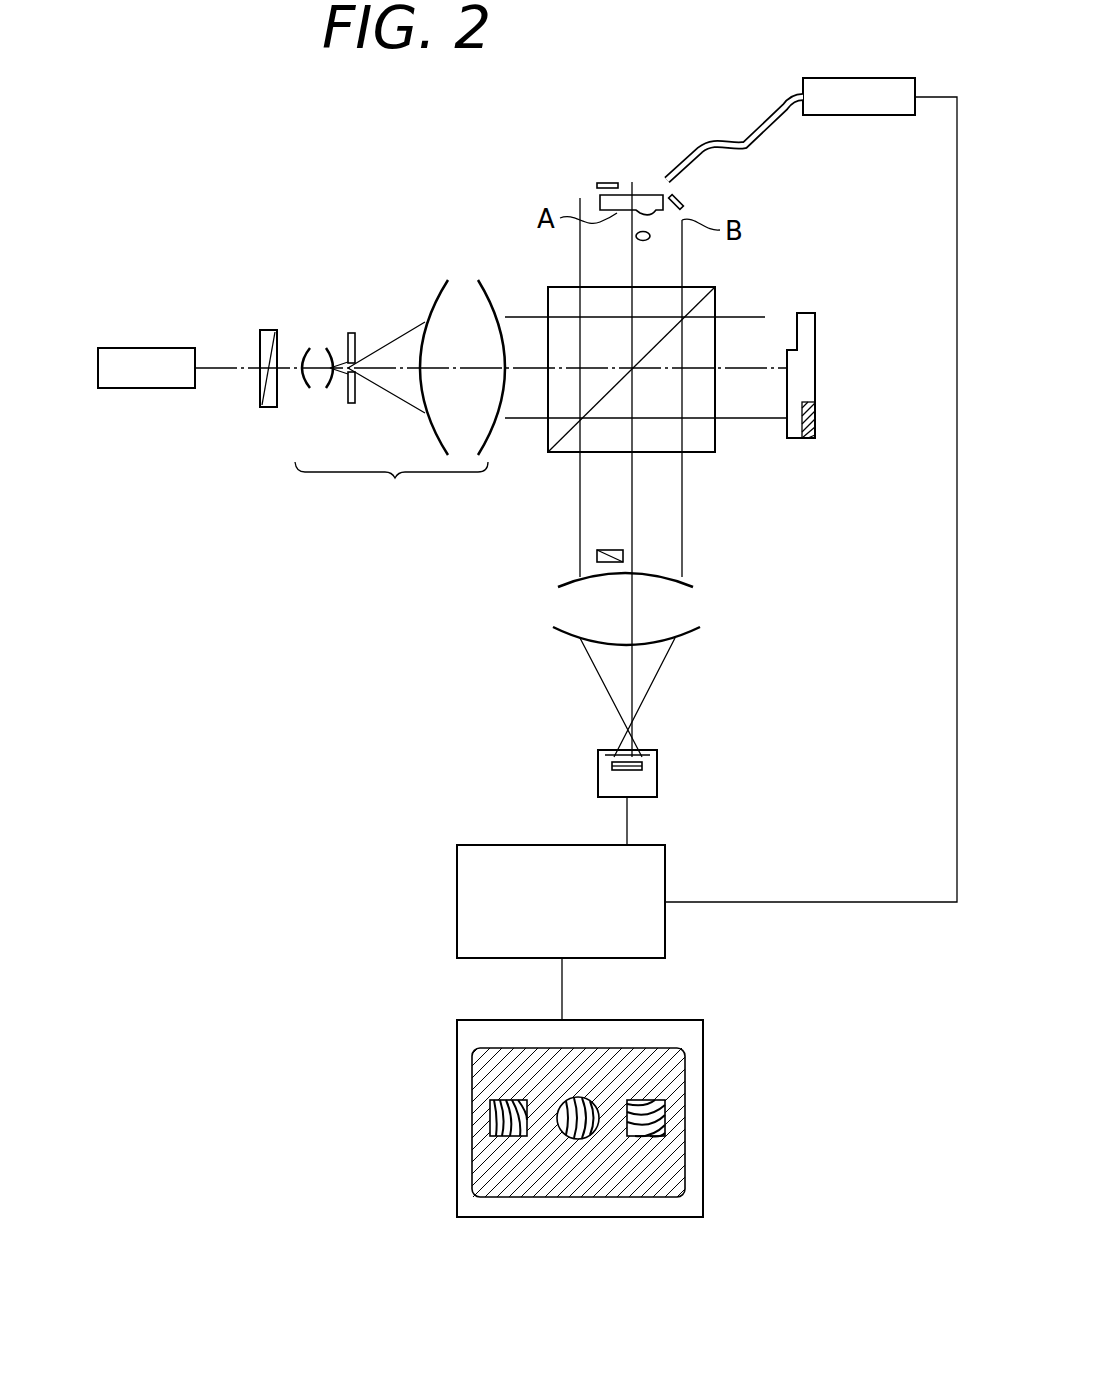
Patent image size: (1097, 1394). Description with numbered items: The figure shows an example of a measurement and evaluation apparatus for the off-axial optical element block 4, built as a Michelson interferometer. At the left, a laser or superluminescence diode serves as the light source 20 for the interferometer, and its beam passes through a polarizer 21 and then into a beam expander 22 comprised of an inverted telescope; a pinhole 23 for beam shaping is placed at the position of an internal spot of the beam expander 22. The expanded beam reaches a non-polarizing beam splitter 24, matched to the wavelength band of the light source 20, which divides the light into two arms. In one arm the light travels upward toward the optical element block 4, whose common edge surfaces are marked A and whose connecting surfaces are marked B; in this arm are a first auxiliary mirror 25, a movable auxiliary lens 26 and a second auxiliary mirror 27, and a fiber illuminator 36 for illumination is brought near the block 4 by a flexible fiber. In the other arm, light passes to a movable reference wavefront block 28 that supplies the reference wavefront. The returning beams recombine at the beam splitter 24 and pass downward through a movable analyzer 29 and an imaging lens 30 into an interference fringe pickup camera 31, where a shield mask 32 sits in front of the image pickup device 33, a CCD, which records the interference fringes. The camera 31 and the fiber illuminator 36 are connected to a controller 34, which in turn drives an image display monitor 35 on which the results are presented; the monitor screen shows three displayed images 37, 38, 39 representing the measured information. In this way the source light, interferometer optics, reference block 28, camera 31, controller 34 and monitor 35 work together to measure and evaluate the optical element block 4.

The off-axial optical element block 4 is at (645, 195).
The light source 20 is at (155, 348).
The polarizer 21 is at (268, 330).
The beam expander 22 is at (400, 395).
The pinhole 23 is at (351, 333).
The non-polarizing beam splitter 24 is at (548, 287).
The first auxiliary mirror 25 is at (603, 183).
The movable auxiliary lens 26 is at (650, 236).
The second auxiliary mirror 27 is at (684, 200).
The movable reference wavefront block 28 is at (815, 332).
The movable analyzer 29 is at (597, 556).
The imaging lens 30 is at (553, 630).
The interference fringe pickup camera 31 is at (657, 787).
The shield mask 32 is at (647, 747).
The image pickup device 33 is at (642, 767).
The controller 34 is at (457, 873).
The image display monitor 35 is at (457, 1053).
The fiber illuminator 36 is at (877, 78).
The displayed image 37 is at (500, 1136).
The displayed image 38 is at (578, 1139).
The displayed image 39 is at (645, 1136).